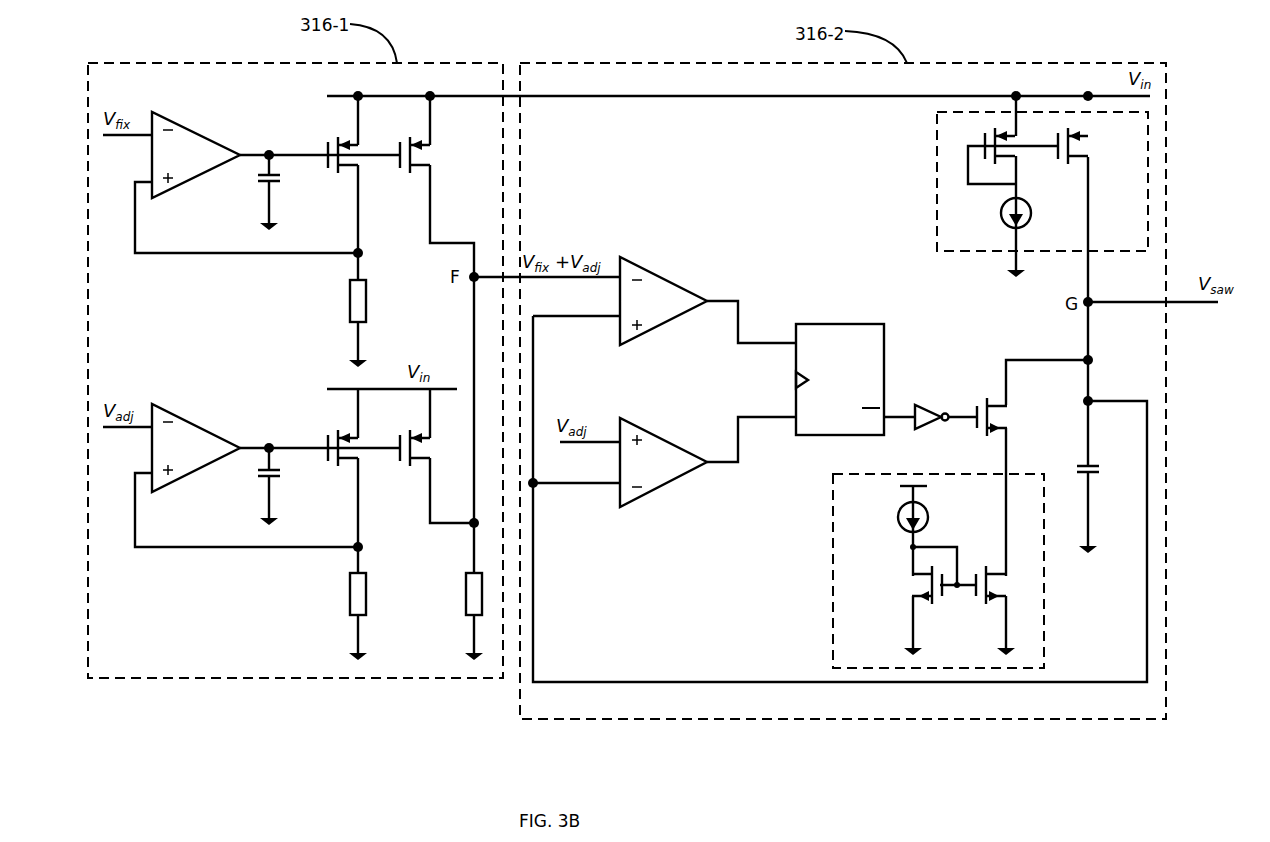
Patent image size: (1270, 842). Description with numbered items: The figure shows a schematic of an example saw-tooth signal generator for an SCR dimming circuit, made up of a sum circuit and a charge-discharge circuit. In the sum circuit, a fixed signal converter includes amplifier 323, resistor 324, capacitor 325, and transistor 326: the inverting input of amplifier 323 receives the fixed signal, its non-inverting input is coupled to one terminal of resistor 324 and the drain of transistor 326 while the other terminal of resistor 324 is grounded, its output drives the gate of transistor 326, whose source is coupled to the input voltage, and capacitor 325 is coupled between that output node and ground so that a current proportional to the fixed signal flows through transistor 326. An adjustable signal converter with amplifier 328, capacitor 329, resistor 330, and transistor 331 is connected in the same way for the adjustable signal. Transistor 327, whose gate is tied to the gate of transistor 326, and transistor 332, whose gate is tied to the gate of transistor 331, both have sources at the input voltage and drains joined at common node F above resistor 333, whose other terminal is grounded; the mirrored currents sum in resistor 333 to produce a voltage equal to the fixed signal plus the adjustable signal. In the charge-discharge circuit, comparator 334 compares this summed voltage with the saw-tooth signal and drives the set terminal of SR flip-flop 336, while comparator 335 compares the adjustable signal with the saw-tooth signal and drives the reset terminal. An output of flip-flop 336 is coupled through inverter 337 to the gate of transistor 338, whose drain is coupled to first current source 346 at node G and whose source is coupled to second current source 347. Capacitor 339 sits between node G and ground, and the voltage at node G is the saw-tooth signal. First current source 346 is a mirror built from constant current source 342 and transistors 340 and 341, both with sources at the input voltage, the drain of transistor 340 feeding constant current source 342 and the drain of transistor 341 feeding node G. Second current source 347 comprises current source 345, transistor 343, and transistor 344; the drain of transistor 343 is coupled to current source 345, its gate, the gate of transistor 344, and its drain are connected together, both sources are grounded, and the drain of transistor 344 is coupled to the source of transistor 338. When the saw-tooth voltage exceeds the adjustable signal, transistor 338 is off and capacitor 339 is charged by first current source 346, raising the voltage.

The amplifier 323 is at (196, 155).
The resistor 324 is at (352, 310).
The capacitor 325 is at (262, 177).
The transistor 326 is at (342, 168).
The transistor 327 is at (418, 150).
The amplifier 328 is at (196, 448).
The capacitor 329 is at (262, 471).
The resistor 330 is at (352, 584).
The transistor 331 is at (344, 462).
The transistor 332 is at (417, 462).
The resistor 333 is at (468, 584).
The comparator 334 is at (663, 301).
The comparator 335 is at (663, 462).
The SR flip-flop 336 is at (840, 379).
The inverter 337 is at (932, 410).
The transistor 338 is at (993, 418).
The capacitor 339 is at (1100, 472).
The transistor 340 is at (1005, 153).
The transistor 341 is at (1078, 148).
The constant current source 342 is at (1000, 213).
The transistor 343 is at (912, 586).
The transistor 344 is at (996, 588).
The current source 345 is at (898, 522).
The first current source 346 is at (935, 150).
The second current source 347 is at (833, 604).